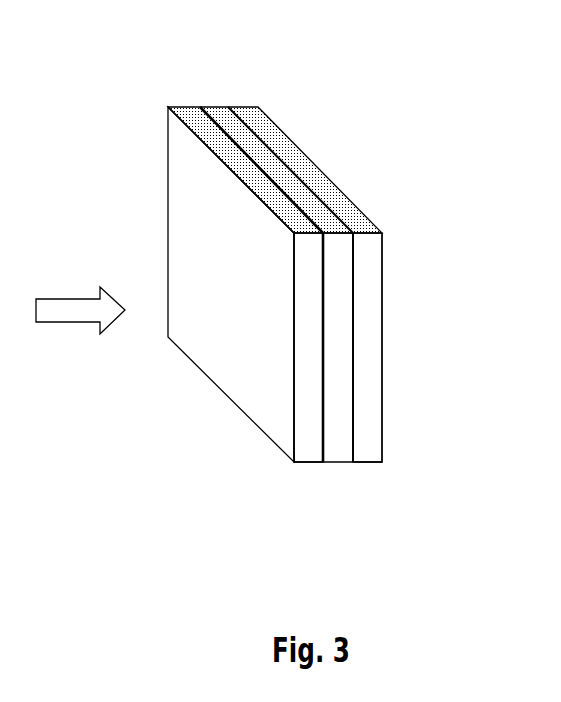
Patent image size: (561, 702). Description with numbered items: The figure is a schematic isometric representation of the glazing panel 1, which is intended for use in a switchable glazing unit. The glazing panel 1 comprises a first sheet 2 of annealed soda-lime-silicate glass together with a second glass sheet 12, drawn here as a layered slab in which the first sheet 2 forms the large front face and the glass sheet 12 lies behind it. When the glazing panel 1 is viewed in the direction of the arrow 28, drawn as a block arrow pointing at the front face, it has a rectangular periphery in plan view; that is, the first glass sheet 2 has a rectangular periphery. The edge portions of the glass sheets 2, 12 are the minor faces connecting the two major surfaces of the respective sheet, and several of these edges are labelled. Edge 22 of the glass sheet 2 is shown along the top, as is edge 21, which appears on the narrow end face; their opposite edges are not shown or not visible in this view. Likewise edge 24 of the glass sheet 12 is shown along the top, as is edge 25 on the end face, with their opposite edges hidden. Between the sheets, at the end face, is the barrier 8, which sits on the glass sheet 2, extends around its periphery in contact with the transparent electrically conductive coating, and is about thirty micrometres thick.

The glazing panel 1 is at (262, 293).
The first sheet 2 is at (178, 163).
The barrier 8 is at (337, 450).
The glass sheet 12 is at (383, 265).
The edge 21 is at (305, 450).
The edge 22 is at (193, 120).
The edge 24 is at (253, 123).
The edge 25 is at (367, 448).
The arrow 28 is at (62, 310).